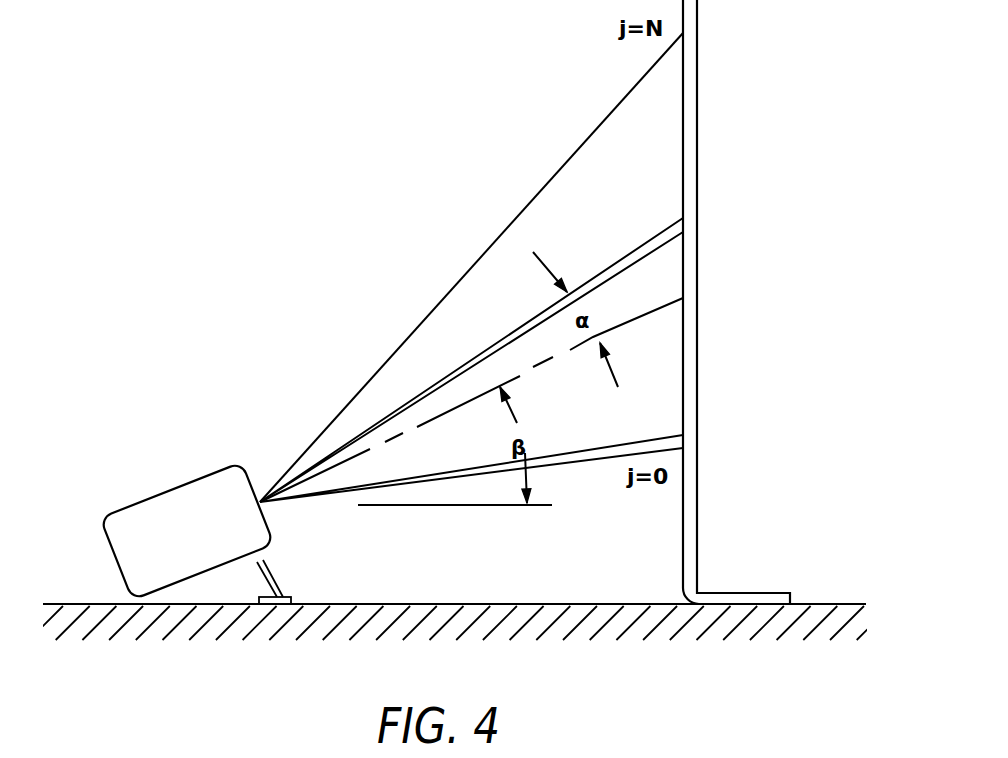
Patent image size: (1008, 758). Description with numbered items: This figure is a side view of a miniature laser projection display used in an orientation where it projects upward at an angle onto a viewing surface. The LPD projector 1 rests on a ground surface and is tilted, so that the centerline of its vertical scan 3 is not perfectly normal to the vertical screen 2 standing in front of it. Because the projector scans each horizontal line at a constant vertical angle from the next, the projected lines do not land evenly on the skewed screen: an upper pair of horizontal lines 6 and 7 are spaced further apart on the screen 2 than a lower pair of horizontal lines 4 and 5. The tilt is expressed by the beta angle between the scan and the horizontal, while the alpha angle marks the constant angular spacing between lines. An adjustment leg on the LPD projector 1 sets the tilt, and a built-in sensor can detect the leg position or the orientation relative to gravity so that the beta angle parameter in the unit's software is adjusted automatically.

The LPD projector 1 is at (147, 493).
The vertical screen 2 is at (697, 512).
The centerline of the vertical scan 3 is at (645, 315).
The lower horizontal line 4 is at (540, 468).
The lower horizontal line 5 is at (683, 443).
The upper horizontal line 6 is at (546, 360).
The upper horizontal line 7 is at (683, 231).